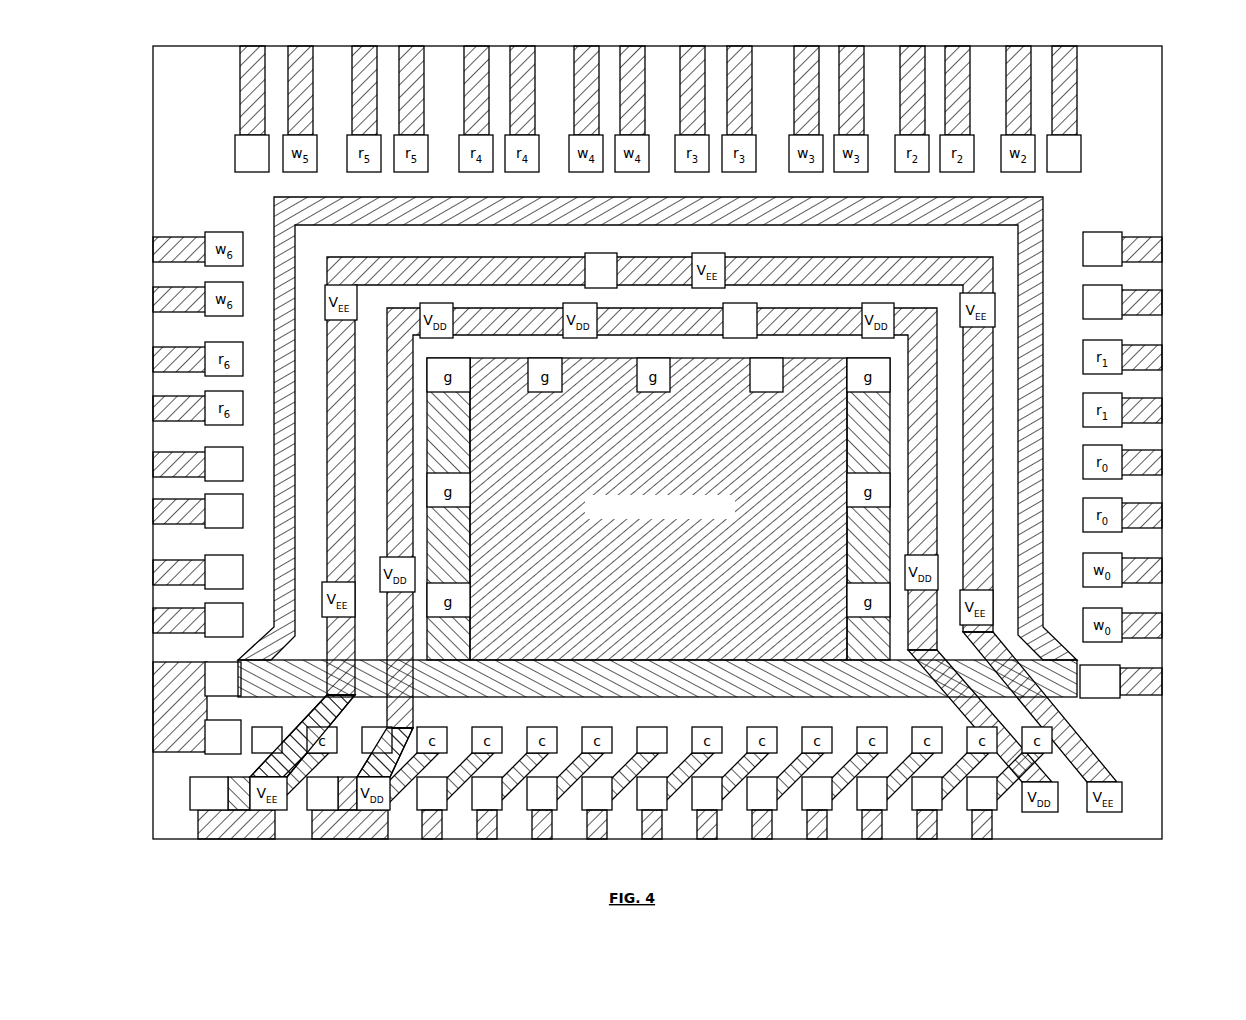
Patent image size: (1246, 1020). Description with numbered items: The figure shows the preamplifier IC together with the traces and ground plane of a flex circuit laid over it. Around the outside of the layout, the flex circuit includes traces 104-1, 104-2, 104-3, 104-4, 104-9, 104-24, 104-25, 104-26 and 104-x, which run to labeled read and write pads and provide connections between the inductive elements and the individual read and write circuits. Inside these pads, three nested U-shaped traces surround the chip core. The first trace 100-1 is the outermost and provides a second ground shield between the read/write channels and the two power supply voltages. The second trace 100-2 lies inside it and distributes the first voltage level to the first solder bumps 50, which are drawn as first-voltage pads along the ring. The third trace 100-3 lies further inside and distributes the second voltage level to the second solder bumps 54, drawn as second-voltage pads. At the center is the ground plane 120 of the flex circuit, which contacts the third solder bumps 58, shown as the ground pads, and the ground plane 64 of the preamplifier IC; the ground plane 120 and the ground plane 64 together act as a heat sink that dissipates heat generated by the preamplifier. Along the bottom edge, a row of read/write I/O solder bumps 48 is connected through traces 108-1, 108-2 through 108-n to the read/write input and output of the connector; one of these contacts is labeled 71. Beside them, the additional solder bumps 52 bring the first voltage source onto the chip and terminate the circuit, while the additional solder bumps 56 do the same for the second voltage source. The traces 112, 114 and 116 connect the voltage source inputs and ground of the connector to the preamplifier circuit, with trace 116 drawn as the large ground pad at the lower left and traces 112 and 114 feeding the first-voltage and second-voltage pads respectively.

The trace 104-9 is at (242, 95).
The trace 104-24 is at (1077, 122).
The trace 104-25 is at (1148, 238).
The trace 104-26 is at (1148, 292).
The trace 104-4 is at (153, 462).
The trace 104-3 is at (153, 512).
The trace 104-2 is at (170, 560).
The trace 104-1 is at (170, 632).
The trace 104-x is at (1140, 697).
The trace 116 is at (165, 707).
The additional solder bumps 52 is at (190, 792).
The trace 112 is at (237, 828).
The additional solder bumps 56 is at (305, 810).
The trace 114 is at (350, 828).
The trace 108-1 is at (431, 832).
The trace 108-2 is at (488, 832).
The trace 108-n is at (973, 823).
The read/write I/O solder bumps 48 is at (612, 800).
The ground plane 64 is at (848, 700).
The column contact 71 is at (657, 736).
The first solder bumps 50 is at (618, 256).
The second solder bumps 54 is at (757, 318).
The third solder bumps 58 is at (778, 357).
The first trace 100-1 is at (928, 216).
The second trace 100-2 is at (820, 262).
The third trace 100-3 is at (484, 318).
The ground plane 120 is at (658, 509).